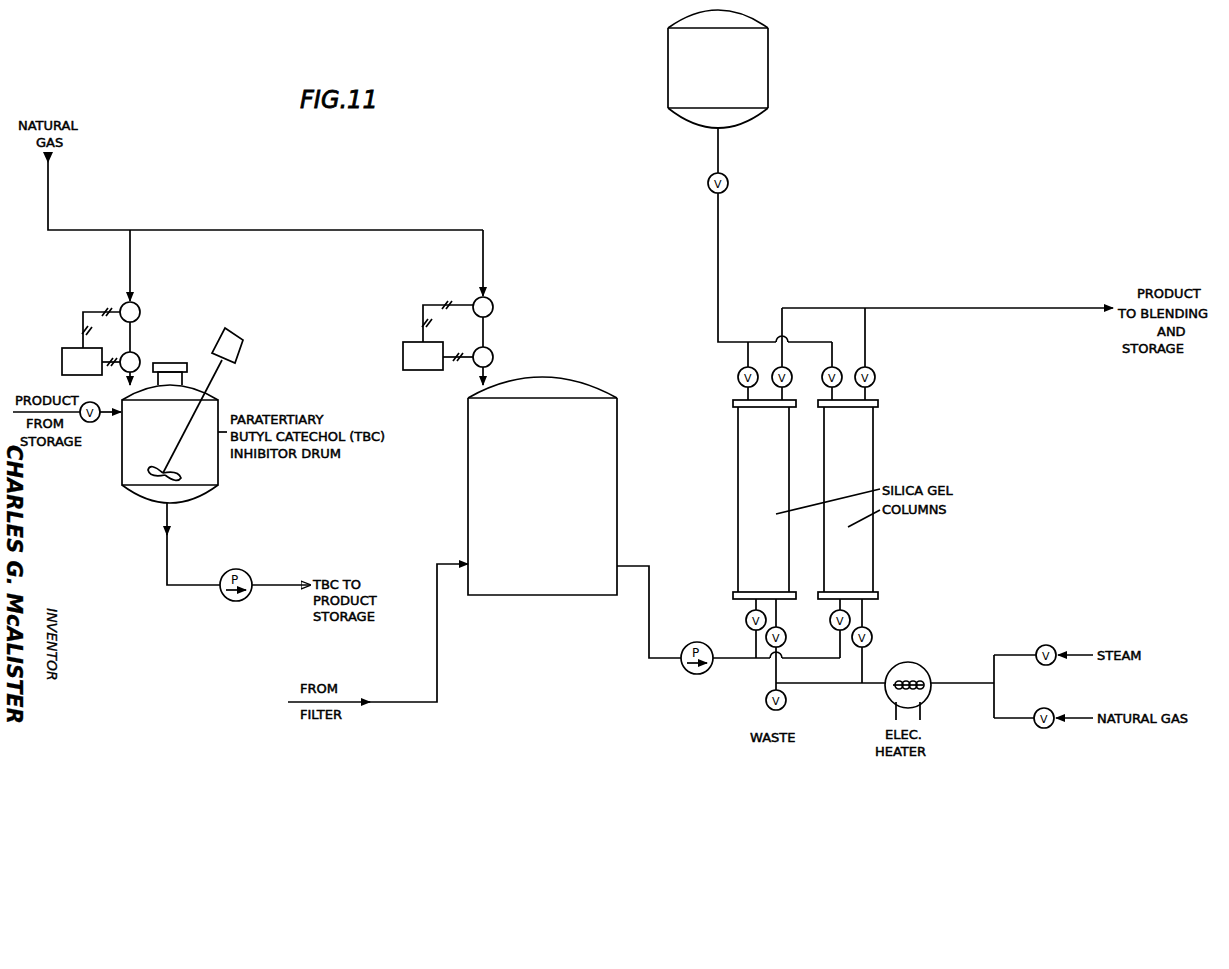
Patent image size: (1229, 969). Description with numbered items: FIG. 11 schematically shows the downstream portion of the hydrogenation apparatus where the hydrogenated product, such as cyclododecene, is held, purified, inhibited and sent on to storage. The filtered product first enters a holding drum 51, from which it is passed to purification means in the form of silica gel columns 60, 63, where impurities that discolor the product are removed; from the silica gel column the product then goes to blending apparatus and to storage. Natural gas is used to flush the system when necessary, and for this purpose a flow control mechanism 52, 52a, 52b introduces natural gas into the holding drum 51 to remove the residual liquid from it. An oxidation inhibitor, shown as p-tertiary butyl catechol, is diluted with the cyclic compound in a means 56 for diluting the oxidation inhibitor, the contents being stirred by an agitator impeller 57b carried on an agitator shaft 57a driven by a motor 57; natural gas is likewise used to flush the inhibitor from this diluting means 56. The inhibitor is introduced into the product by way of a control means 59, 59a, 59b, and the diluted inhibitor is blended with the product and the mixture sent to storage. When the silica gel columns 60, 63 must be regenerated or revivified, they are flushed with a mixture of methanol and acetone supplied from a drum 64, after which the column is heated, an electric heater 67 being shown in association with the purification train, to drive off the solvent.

The holding drum 51 is at (467, 472).
The flow control mechanism 52 is at (407, 343).
The flow control mechanism 52a is at (490, 302).
The flow control mechanism 52b is at (490, 352).
The means for diluting oxidation inhibitor 56 is at (217, 412).
The motor 57 is at (243, 346).
The agitator shaft 57a is at (185, 432).
The agitator impeller 57b is at (160, 467).
The control means 59 is at (68, 348).
The control means 59a is at (137, 307).
The control means 59b is at (137, 357).
The silica gel column 60 is at (742, 441).
The silica gel column 63 is at (866, 441).
The drum 64 is at (743, 93).
The electric heater 67 is at (920, 656).